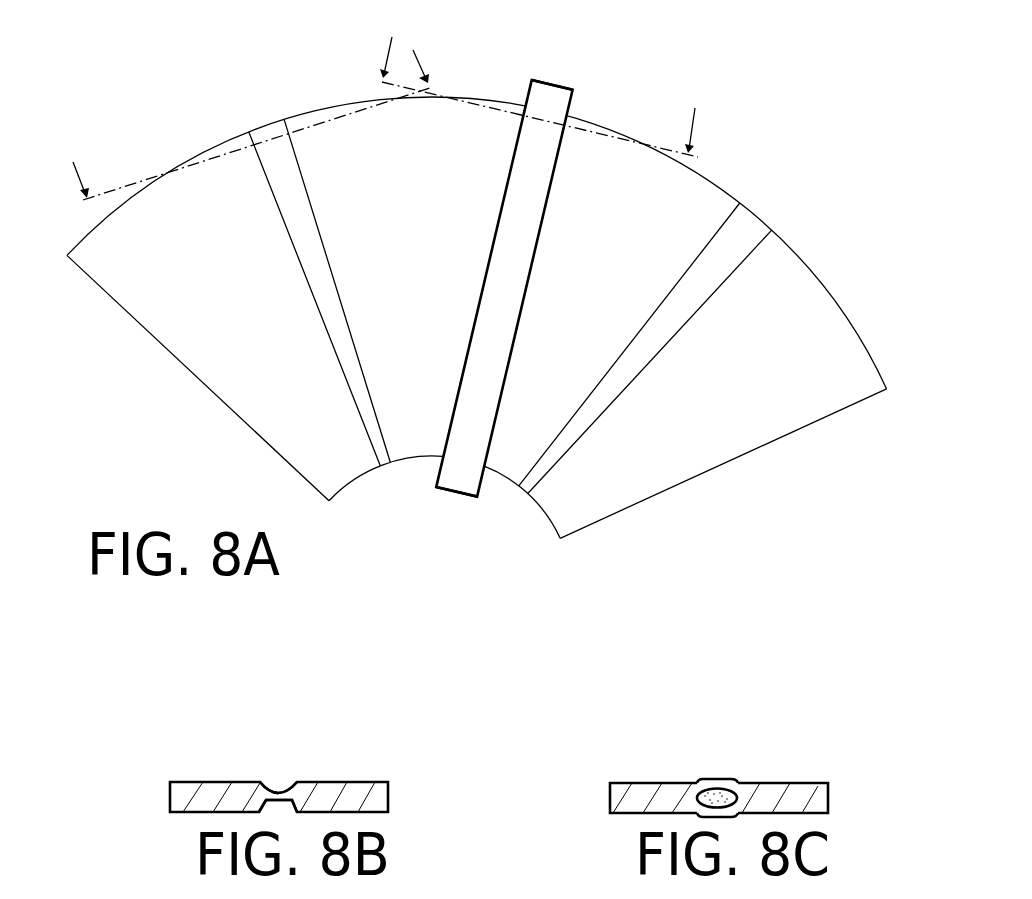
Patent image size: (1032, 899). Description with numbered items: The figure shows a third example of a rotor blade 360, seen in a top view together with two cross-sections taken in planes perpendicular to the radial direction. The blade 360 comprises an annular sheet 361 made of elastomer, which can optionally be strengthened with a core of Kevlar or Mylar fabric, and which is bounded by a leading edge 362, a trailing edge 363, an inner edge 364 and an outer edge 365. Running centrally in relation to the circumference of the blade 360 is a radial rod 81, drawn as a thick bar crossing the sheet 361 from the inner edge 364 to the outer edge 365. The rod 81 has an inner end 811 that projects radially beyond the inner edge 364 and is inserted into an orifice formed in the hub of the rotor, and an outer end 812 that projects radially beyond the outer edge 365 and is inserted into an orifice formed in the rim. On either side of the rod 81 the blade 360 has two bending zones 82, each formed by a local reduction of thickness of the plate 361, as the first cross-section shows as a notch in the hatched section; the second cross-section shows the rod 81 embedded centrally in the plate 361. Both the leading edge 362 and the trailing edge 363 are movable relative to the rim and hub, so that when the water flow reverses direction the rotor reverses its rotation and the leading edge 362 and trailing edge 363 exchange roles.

In FIG. 8A, the blade 360 is at (493, 292).
In FIG. 8A, the annular sheet 361 is at (496, 334).
In FIG. 8B, the annular sheet 361 is at (338, 782).
In FIG. 8C, the annular sheet 361 is at (782, 783).
In FIG. 8A, the leading edge 362 is at (262, 443).
In FIG. 8A, the trailing edge 363 is at (677, 487).
In FIG. 8A, the inner edge 364 is at (542, 513).
In FIG. 8A, the outer edge 365 is at (818, 273).
In FIG. 8A, the radial rod 81 is at (502, 272).
In FIG. 8C, the radial rod 81 is at (718, 787).
In FIG. 8A, the inner end 811 is at (435, 476).
In FIG. 8A, the outer end 812 is at (536, 79).
In FIG. 8A, the bending zone 82 is at (275, 168).
In FIG. 8B, the bending zone 82 is at (272, 790).